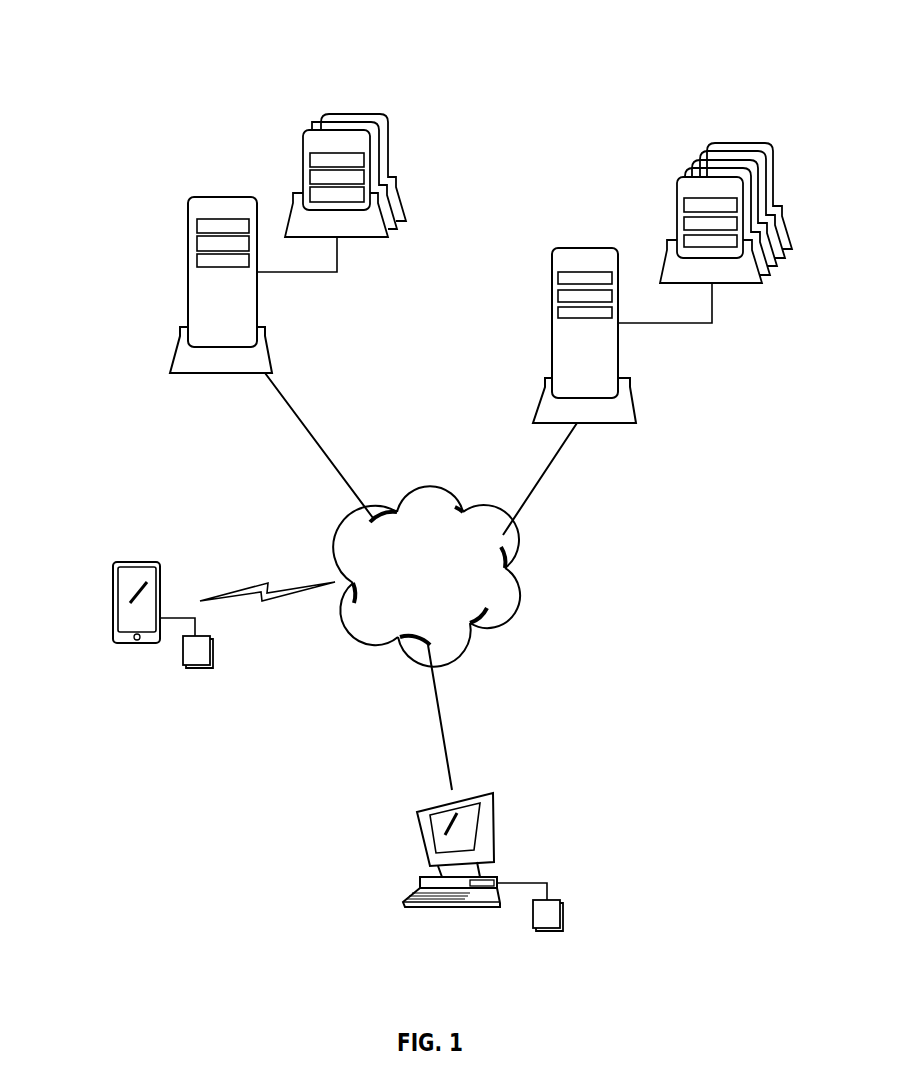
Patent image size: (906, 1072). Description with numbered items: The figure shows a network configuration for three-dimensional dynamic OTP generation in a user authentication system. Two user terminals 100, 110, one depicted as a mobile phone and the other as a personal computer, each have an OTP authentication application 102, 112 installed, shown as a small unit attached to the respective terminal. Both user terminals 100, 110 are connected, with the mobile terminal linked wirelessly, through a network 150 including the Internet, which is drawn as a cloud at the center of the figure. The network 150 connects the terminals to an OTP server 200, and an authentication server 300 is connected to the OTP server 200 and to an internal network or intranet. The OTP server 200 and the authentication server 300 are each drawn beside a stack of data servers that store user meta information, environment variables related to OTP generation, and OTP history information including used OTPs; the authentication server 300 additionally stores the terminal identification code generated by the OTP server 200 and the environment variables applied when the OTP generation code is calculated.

The user terminal 100 is at (128, 590).
The OTP authentication application 102 is at (200, 653).
The user terminal 110 is at (435, 824).
The OTP authentication application 112 is at (553, 915).
The network 150 is at (503, 593).
The OTP server 200 is at (202, 302).
The authentication server 300 is at (567, 353).